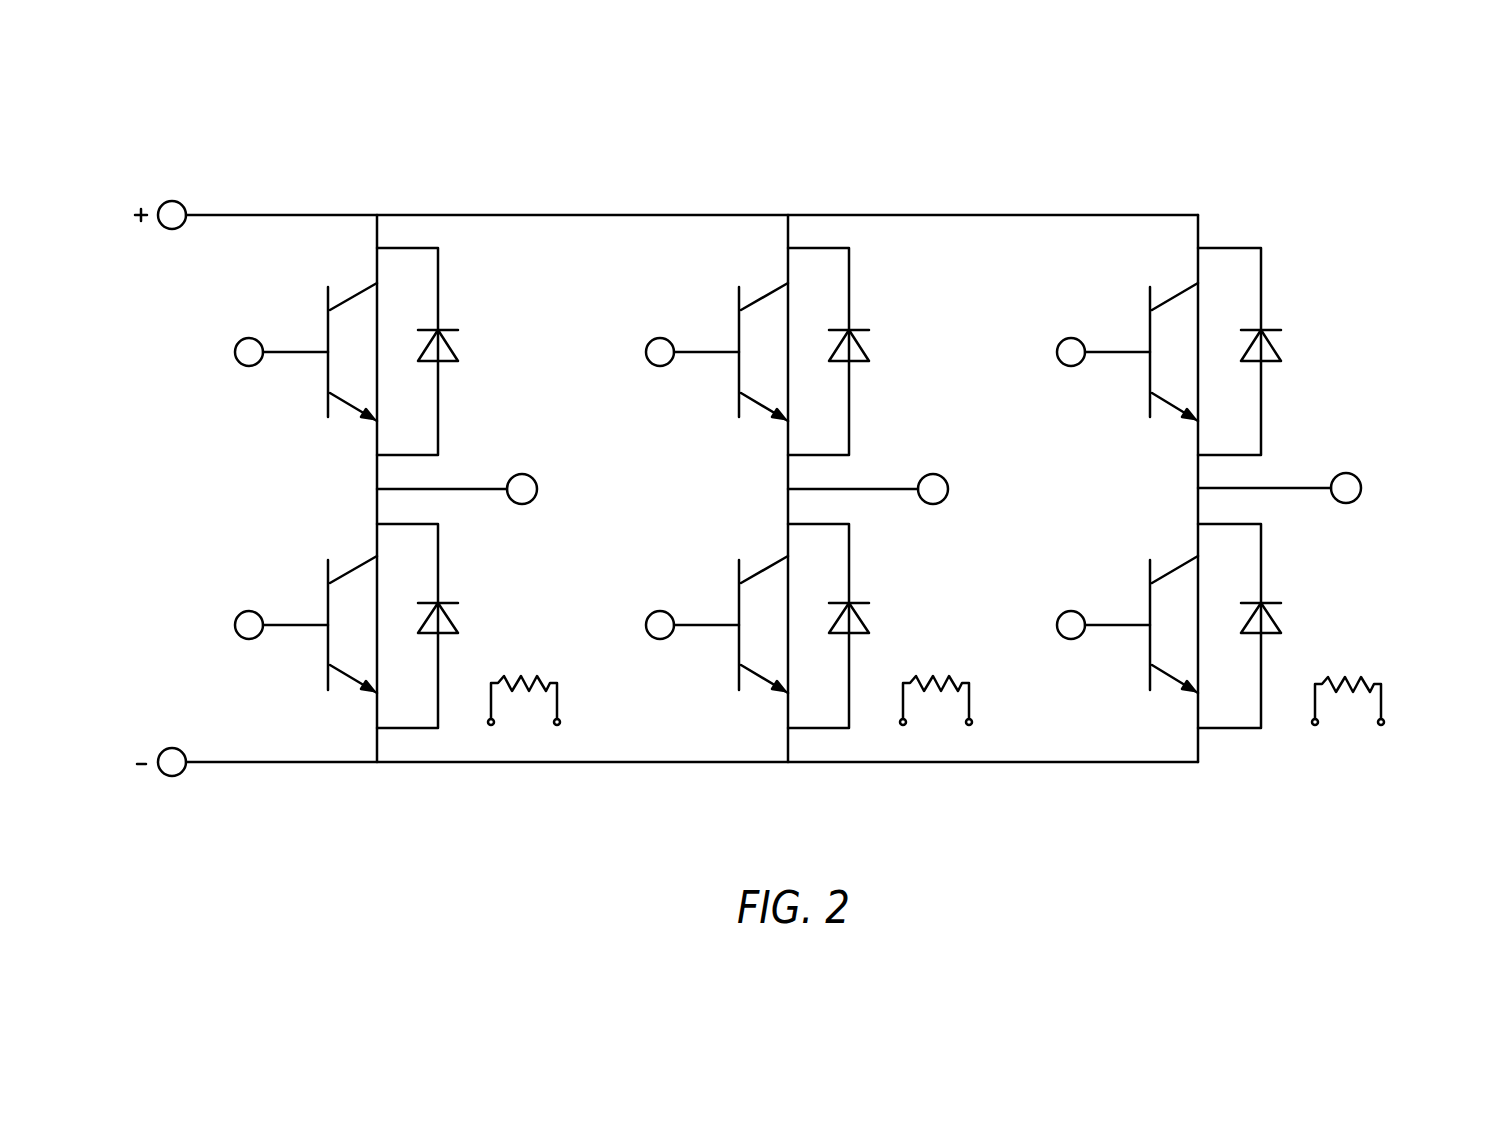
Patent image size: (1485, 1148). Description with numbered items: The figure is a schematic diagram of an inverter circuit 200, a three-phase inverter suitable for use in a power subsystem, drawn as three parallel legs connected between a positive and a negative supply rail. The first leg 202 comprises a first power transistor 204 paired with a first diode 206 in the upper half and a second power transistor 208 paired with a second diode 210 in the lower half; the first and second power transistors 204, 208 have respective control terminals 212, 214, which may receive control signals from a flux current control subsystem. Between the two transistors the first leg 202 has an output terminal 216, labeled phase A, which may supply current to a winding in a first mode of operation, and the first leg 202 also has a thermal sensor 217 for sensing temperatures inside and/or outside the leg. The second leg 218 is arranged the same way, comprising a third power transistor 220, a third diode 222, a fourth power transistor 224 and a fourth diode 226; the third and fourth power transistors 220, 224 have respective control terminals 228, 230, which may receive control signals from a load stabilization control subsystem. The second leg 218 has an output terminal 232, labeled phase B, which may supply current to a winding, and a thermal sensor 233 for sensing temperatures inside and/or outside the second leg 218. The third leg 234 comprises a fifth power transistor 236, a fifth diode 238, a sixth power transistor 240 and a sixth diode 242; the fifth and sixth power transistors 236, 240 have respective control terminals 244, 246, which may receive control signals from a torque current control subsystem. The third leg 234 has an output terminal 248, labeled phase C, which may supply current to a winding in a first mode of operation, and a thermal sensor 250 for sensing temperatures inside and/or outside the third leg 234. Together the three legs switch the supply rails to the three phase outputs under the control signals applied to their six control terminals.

The inverter circuit 200 is at (1297, 147).
The first leg 202 is at (412, 177).
The first power transistor 204 is at (312, 300).
The first diode 206 is at (467, 335).
The second power transistor 208 is at (312, 577).
The second diode 210 is at (468, 608).
The control terminal 212 is at (235, 352).
The control terminal 214 is at (235, 625).
The output terminal 216 is at (522, 474).
The thermal sensor 217 is at (521, 677).
The second leg 218 is at (800, 178).
The third power transistor 220 is at (723, 302).
The third diode 222 is at (878, 337).
The fourth power transistor 224 is at (723, 577).
The fourth diode 226 is at (880, 608).
The control terminal 228 is at (646, 352).
The control terminal 230 is at (646, 625).
The output terminal 232 is at (933, 474).
The thermal sensor 233 is at (935, 678).
The third leg 234 is at (1162, 178).
The fifth power transistor 236 is at (1135, 302).
The fifth diode 238 is at (1290, 335).
The sixth power transistor 240 is at (1135, 577).
The sixth diode 242 is at (1292, 607).
The control terminal 244 is at (1057, 352).
The control terminal 246 is at (1057, 625).
The output terminal 248 is at (1343, 473).
The thermal sensor 250 is at (1346, 678).